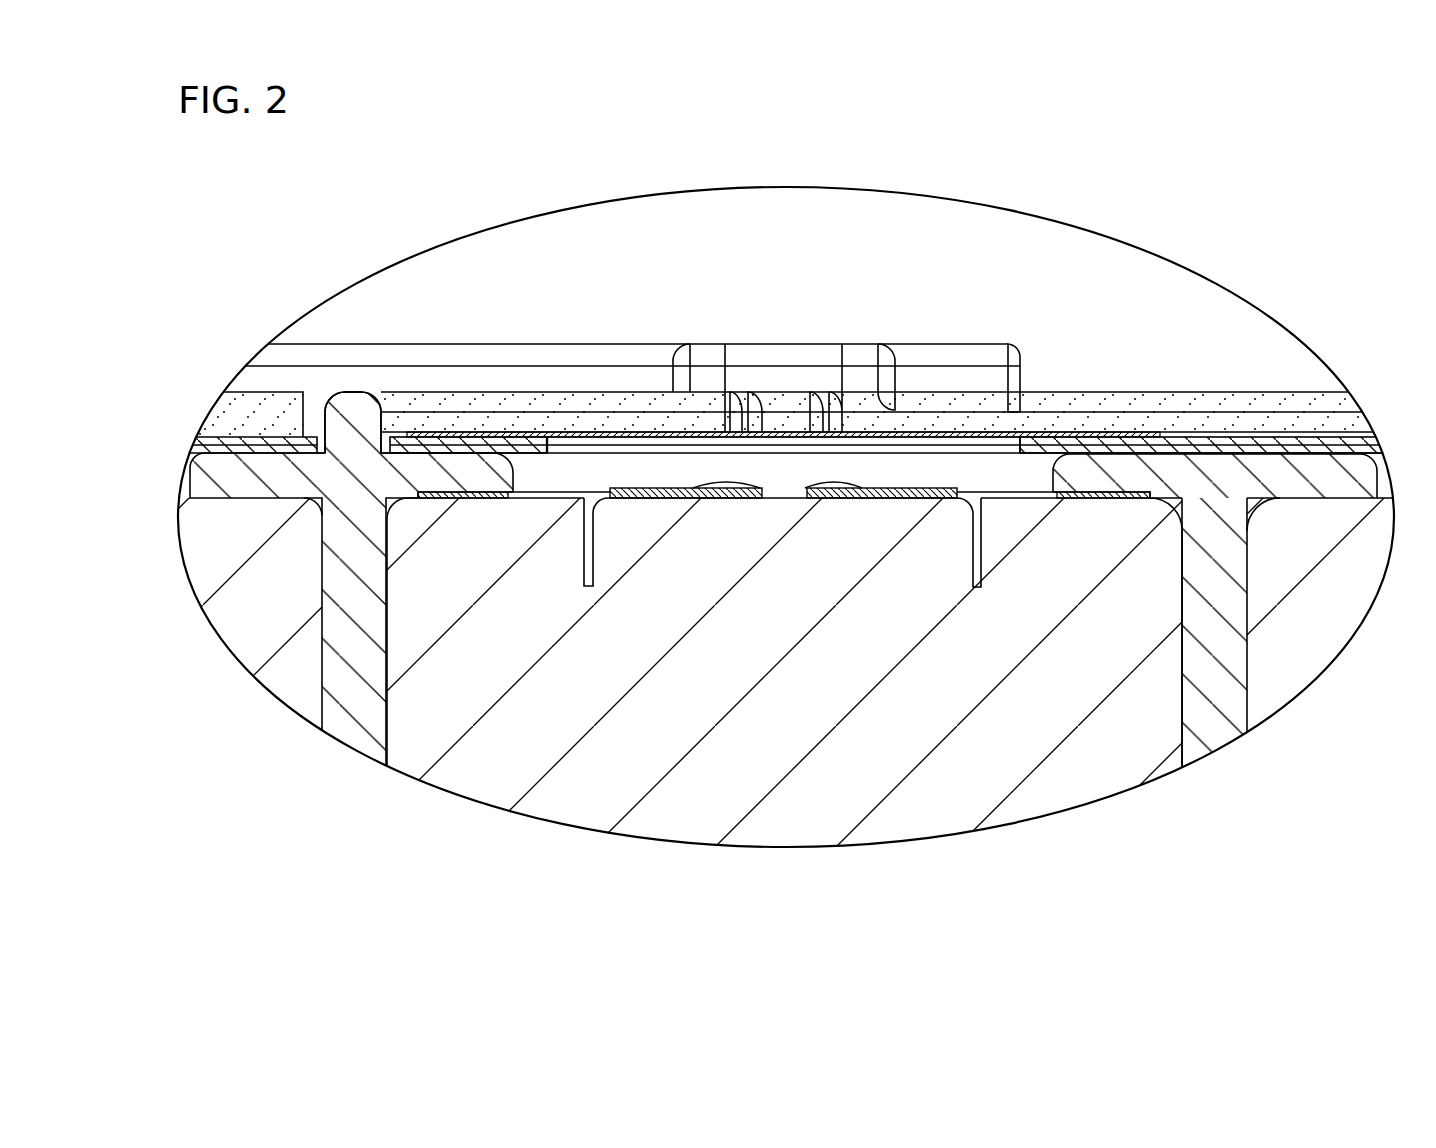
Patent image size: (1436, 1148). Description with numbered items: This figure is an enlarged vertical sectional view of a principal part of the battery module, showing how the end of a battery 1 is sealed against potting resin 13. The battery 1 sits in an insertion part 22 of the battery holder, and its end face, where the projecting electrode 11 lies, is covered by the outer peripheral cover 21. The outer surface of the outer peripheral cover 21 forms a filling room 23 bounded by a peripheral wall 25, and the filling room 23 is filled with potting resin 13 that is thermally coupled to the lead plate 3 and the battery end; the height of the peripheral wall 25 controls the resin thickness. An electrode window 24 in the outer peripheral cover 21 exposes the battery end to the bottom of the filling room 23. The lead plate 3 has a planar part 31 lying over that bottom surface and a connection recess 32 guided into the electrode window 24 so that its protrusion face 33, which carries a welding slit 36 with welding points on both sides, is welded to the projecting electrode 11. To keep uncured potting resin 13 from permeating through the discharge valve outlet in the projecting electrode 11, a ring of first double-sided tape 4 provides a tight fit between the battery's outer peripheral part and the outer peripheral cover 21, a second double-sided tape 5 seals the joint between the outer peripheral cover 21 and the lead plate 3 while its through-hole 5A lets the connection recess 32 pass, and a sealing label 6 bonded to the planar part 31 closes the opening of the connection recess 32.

The battery 1 is at (766, 775).
The lead plate 3 is at (1197, 141).
The first double-sided tape 4 is at (458, 498).
The second double-sided tape 5 is at (438, 447).
The through-hole 5A is at (498, 432).
The sealing label 6 is at (587, 437).
The projecting electrode 11 is at (830, 533).
The potting resin 13 is at (548, 403).
The outer peripheral cover 21 is at (447, 503).
The insertion part 22 is at (338, 677).
The filling room 23 is at (371, 413).
The electrode window 24 is at (1043, 455).
The peripheral wall 25 is at (355, 403).
The planar part 31 is at (494, 447).
The connection recess 32 is at (946, 463).
The protrusion face 33 is at (658, 492).
The welding slit 36 is at (788, 472).